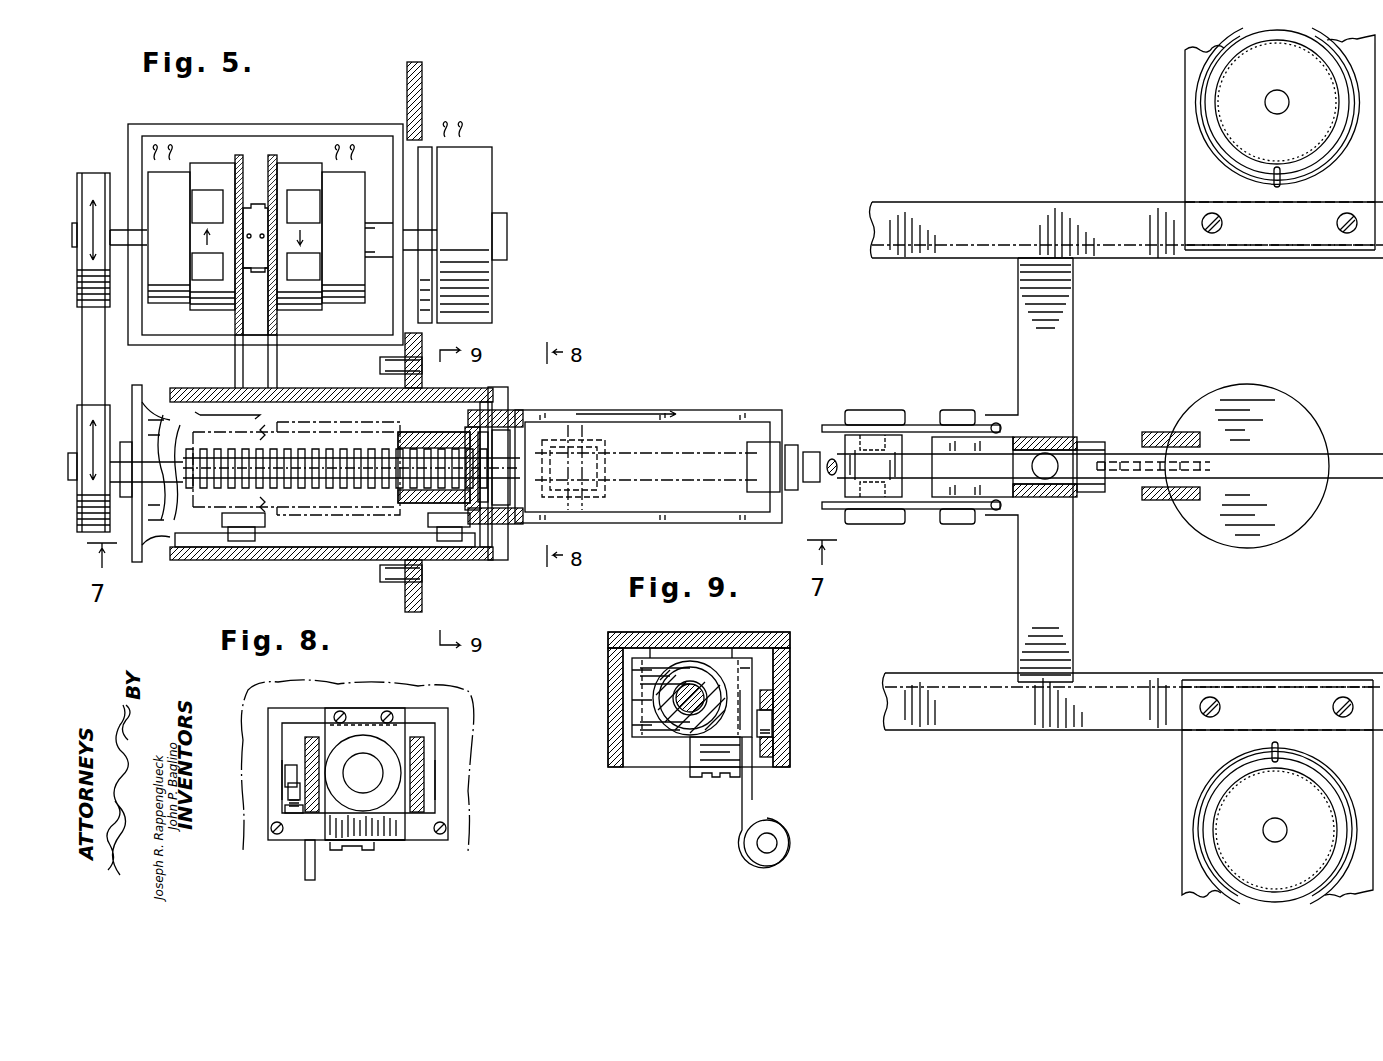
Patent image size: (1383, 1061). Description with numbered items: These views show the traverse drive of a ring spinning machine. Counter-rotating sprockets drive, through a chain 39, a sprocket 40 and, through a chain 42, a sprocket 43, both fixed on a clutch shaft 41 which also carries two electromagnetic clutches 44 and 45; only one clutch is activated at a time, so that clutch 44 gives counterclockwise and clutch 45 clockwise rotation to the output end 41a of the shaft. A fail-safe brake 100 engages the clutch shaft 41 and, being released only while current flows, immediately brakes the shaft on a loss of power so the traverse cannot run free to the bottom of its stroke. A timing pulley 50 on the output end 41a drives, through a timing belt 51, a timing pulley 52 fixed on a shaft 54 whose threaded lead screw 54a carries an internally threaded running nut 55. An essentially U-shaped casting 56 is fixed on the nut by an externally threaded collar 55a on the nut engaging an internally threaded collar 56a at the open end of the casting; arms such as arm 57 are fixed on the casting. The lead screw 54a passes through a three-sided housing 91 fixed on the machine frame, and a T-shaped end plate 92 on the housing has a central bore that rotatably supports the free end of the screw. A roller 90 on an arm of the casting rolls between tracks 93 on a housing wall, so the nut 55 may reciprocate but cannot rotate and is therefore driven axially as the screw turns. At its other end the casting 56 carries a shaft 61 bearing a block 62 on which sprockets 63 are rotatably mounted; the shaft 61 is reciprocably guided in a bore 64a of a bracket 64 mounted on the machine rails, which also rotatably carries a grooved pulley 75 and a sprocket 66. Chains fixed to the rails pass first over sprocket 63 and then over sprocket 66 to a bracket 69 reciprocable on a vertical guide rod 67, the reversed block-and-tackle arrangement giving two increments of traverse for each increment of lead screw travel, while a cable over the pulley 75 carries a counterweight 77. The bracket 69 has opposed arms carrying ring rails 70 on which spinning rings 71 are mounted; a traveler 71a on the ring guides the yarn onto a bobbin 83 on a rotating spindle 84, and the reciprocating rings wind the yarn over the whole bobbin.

In FIG. 5, the chain 39 is at (277, 357).
In FIG. 5, the sprocket 40 is at (275, 158).
In FIG. 5, the clutch shaft 41 is at (259, 192).
In FIG. 5, the output end of the clutch shaft 41a is at (148, 228).
In FIG. 5, the chain 42 is at (240, 358).
In FIG. 5, the sprocket 43 is at (237, 158).
In FIG. 5, the electromagnetic clutch 44 is at (166, 311).
In FIG. 5, the electromagnetic clutch 45 is at (333, 314).
In FIG. 5, the timing pulley 50 is at (103, 185).
In FIG. 5, the timing belt 51 is at (132, 325).
In FIG. 5, the timing pulley 52 is at (80, 535).
In FIG. 5, the shaft 54 is at (115, 475).
In FIG. 5, the lead screw 54a is at (365, 488).
In FIG. 8, the lead screw 54a is at (365, 753).
In FIG. 9, the lead screw 54a is at (680, 710).
In FIG. 5, the running nut 55 is at (415, 432).
In FIG. 9, the running nut 55 is at (705, 690).
In FIG. 5, the externally threaded collar 55a is at (503, 528).
In FIG. 5, the casting 56 is at (270, 542).
In FIG. 8, the casting 56 is at (305, 740).
In FIG. 9, the casting 56 is at (638, 672).
In FIG. 5, the internally threaded collar 56a is at (475, 525).
In FIG. 8, the arm 57 is at (303, 877).
In FIG. 9, the arm 57 is at (750, 812).
In FIG. 5, the shaft 61 is at (680, 430).
In FIG. 5, the block 62 is at (860, 435).
In FIG. 5, the sprocket 63 is at (868, 515).
In FIG. 5, the bracket 64 is at (1050, 440).
In FIG. 5, the bore 64a is at (1070, 452).
In FIG. 5, the sprocket 66 is at (955, 520).
In FIG. 5, the vertical guide rod 67 is at (1050, 452).
In FIG. 5, the bracket 69 is at (1060, 580).
In FIG. 5, the ring rail 70 is at (930, 217).
In FIG. 5, the twisting or spinning ring 71 is at (1207, 110).
In FIG. 5, the traveler 71a is at (1280, 185).
In FIG. 5, the grooved pulley 75 is at (1262, 434).
In FIG. 5, the counterweight 77 is at (1240, 387).
In FIG. 5, the bobbin 83 is at (1225, 95).
In FIG. 5, the spindle 84 is at (1280, 98).
In FIG. 5, the roller 90 is at (240, 545).
In FIG. 8, the roller 90 is at (290, 792).
In FIG. 9, the roller 90 is at (771, 720).
In FIG. 5, the three-sided housing 91 is at (475, 407).
In FIG. 8, the three-sided housing 91 is at (270, 712).
In FIG. 9, the three-sided housing 91 is at (790, 612).
In FIG. 5, the T-shaped end plate 92 is at (510, 437).
In FIG. 8, the T-shaped end plate 92 is at (393, 842).
In FIG. 9, the T-shaped end plate 92 is at (710, 658).
In FIG. 5, the track 93 is at (285, 535).
In FIG. 8, the track 93 is at (286, 766).
In FIG. 9, the track 93 is at (770, 695).
In FIG. 5, the fail-safe brake 100 is at (480, 200).